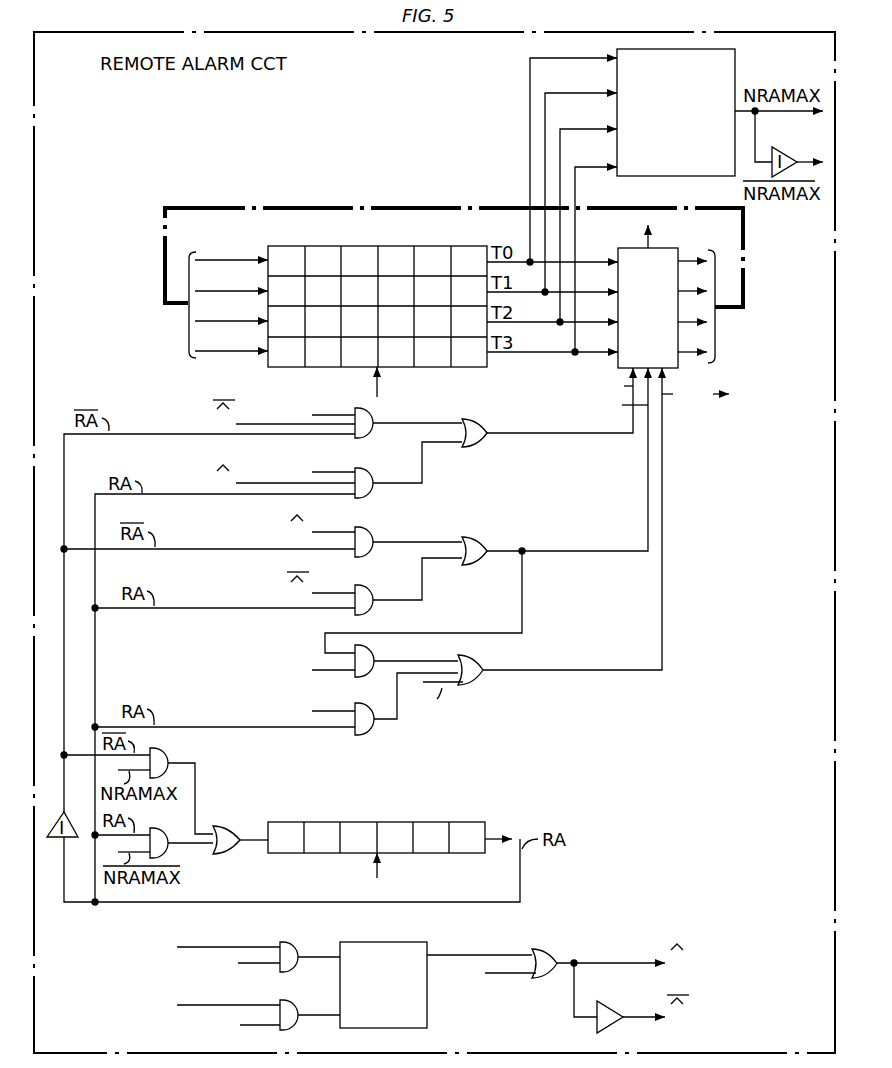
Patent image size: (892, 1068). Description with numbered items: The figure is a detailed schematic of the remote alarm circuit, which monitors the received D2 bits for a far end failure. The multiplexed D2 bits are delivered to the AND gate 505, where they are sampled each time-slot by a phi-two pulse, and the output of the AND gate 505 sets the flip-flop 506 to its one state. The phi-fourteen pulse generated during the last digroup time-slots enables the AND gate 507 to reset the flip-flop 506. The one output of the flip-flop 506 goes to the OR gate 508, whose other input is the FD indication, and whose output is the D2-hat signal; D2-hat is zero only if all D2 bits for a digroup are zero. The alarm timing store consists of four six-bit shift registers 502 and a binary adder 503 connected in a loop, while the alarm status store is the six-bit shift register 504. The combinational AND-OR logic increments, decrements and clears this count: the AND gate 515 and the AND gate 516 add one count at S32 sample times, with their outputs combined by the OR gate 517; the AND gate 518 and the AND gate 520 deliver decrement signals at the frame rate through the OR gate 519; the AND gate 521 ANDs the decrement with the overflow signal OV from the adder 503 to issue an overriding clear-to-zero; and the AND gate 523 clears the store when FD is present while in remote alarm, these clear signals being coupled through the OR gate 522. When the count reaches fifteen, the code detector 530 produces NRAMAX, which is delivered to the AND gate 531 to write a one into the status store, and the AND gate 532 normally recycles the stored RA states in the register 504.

The six-bit shift registers 502 is at (266, 290).
The binary adder 503 is at (618, 364).
The six-bit shift register 504 is at (317, 856).
The AND gate 505 is at (287, 941).
The flip-flop 506 is at (395, 941).
The AND gate 507 is at (288, 1001).
The OR gate 508 is at (540, 950).
The AND gate 515 is at (366, 438).
The AND gate 516 is at (366, 498).
The OR gate 517 is at (475, 445).
The AND gate 518 is at (366, 557).
The OR gate 519 is at (472, 540).
The AND gate 520 is at (366, 615).
The AND gate 521 is at (368, 656).
The OR gate 522 is at (468, 660).
The AND gate 523 is at (366, 735).
The code detector 530 is at (655, 177).
The AND gate 531 is at (180, 747).
The AND gate 532 is at (158, 834).